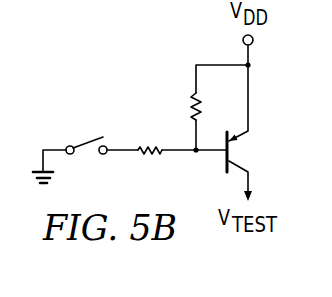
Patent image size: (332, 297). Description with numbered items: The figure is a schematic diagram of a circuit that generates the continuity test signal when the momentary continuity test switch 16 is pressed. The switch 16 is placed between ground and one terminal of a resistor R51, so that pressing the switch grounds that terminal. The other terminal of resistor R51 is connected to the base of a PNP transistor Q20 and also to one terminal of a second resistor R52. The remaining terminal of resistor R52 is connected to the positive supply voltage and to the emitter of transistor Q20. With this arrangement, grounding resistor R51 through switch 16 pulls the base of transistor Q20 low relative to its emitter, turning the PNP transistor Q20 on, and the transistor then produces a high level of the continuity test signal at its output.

The momentary continuity test switch 16 is at (85, 141).
The resistor R51 is at (149, 165).
The resistor R52 is at (197, 107).
The PNP transistor Q20 is at (254, 133).